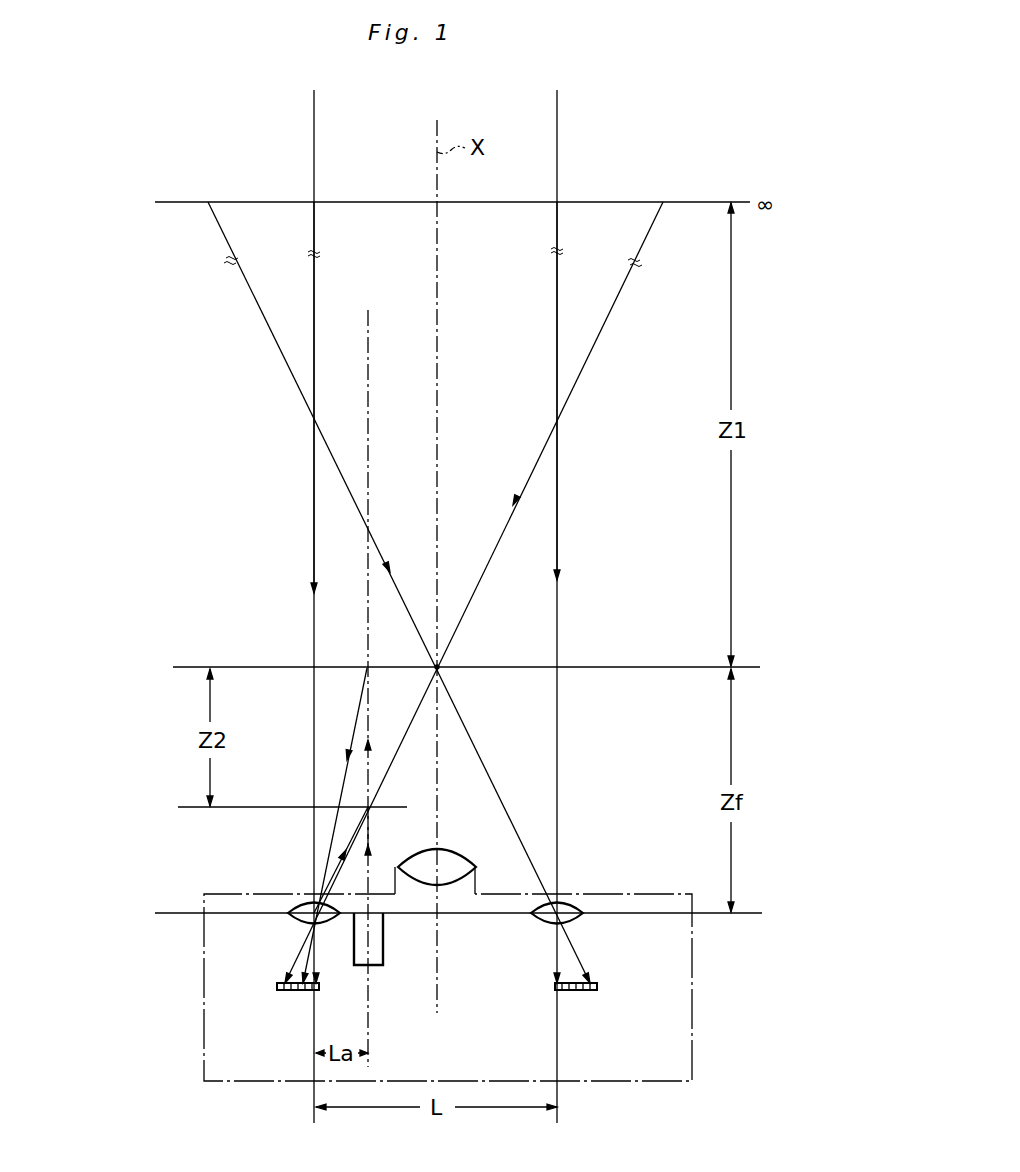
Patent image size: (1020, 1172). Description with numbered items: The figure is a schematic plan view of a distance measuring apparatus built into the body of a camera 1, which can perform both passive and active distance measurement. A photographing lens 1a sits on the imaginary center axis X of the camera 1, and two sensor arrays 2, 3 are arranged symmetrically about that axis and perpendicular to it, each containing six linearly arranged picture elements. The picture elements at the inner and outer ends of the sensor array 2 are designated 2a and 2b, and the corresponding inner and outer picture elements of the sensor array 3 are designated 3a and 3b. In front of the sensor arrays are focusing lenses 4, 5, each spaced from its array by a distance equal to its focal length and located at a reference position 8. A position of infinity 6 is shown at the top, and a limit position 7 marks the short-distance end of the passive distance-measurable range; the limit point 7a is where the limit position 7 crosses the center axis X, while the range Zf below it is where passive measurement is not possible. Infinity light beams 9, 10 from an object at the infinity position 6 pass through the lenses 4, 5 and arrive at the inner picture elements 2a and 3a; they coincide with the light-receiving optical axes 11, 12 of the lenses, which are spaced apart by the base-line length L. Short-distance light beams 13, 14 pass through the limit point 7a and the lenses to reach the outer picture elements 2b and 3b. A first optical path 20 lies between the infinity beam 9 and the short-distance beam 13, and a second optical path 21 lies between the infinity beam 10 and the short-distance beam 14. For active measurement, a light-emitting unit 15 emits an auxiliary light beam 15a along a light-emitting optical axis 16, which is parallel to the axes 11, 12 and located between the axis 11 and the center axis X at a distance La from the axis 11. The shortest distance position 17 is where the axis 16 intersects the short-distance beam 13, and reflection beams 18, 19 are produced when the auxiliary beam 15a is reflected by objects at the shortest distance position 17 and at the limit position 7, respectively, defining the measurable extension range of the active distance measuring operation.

The camera 1 is at (694, 1030).
The photographing lens 1a is at (452, 851).
The sensor array 2 is at (270, 975).
The picture element 2a is at (319, 991).
The picture element 2b is at (284, 992).
The sensor array 3 is at (606, 975).
The picture element 3a is at (557, 992).
The picture element 3b is at (597, 991).
The focusing lens 4 is at (302, 902).
The focusing lens 5 is at (576, 904).
The position of infinity 6 is at (715, 202).
The limit position 7 is at (752, 667).
The limit point 7a is at (440, 664).
The reference position 8 is at (755, 913).
The ∞ light beam 9 is at (316, 288).
The ∞ light beam 10 is at (555, 297).
The light-receiving optical axis 11 is at (316, 122).
The light-receiving optical axis 12 is at (559, 143).
The short-distance light beam 13 is at (606, 318).
The short-distance light beam 14 is at (258, 305).
The light-emitting unit 15 is at (381, 950).
The auxiliary light beam 15a is at (370, 830).
The light-emitting optical axis 16 is at (368, 345).
The shortest distance position 17 is at (190, 807).
The reflection beam 18 is at (348, 847).
The reflection beam 19 is at (356, 722).
The first optical path 20 is at (404, 700).
The second optical path 21 is at (517, 700).